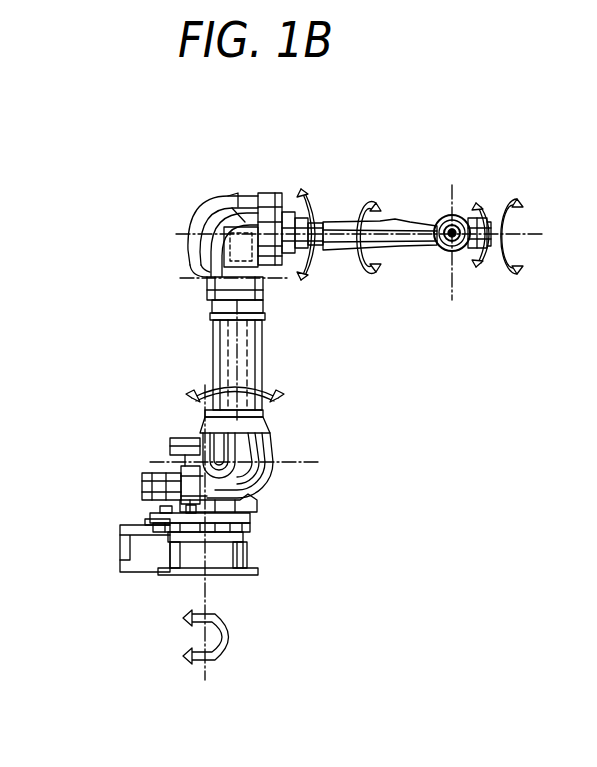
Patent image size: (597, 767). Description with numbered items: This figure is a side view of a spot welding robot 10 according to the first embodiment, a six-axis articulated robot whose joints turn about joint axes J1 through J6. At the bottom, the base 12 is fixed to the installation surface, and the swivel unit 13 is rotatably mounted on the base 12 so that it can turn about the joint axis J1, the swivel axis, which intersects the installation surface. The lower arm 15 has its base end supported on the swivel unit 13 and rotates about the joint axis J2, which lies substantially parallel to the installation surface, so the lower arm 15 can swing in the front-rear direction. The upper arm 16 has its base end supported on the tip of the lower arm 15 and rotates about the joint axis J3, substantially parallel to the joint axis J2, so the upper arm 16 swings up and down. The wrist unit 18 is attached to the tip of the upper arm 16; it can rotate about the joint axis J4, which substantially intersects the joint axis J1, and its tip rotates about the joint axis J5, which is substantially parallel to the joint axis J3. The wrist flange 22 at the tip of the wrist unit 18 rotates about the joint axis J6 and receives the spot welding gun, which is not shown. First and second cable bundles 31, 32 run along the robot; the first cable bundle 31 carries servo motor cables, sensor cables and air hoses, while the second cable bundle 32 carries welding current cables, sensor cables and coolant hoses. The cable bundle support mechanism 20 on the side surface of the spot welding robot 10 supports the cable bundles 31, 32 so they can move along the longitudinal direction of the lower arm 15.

The spot welding robot 10 is at (90, 265).
The base 12 is at (146, 598).
The swivel unit 13 is at (142, 481).
The lower arm 15 is at (258, 446).
The upper arm 16 is at (282, 198).
The wrist unit 18 is at (441, 214).
The cable bundle support mechanism 20 is at (272, 352).
The wrist flange 22 is at (485, 258).
The first cable bundle 31 is at (214, 445).
The second cable bundle 32 is at (259, 445).
The joint axis J1 is at (206, 550).
The joint axis J2 is at (269, 470).
The joint axis J3 is at (205, 294).
The joint axis J4 is at (182, 234).
The joint axis J5 is at (435, 249).
The joint axis J6 is at (539, 236).